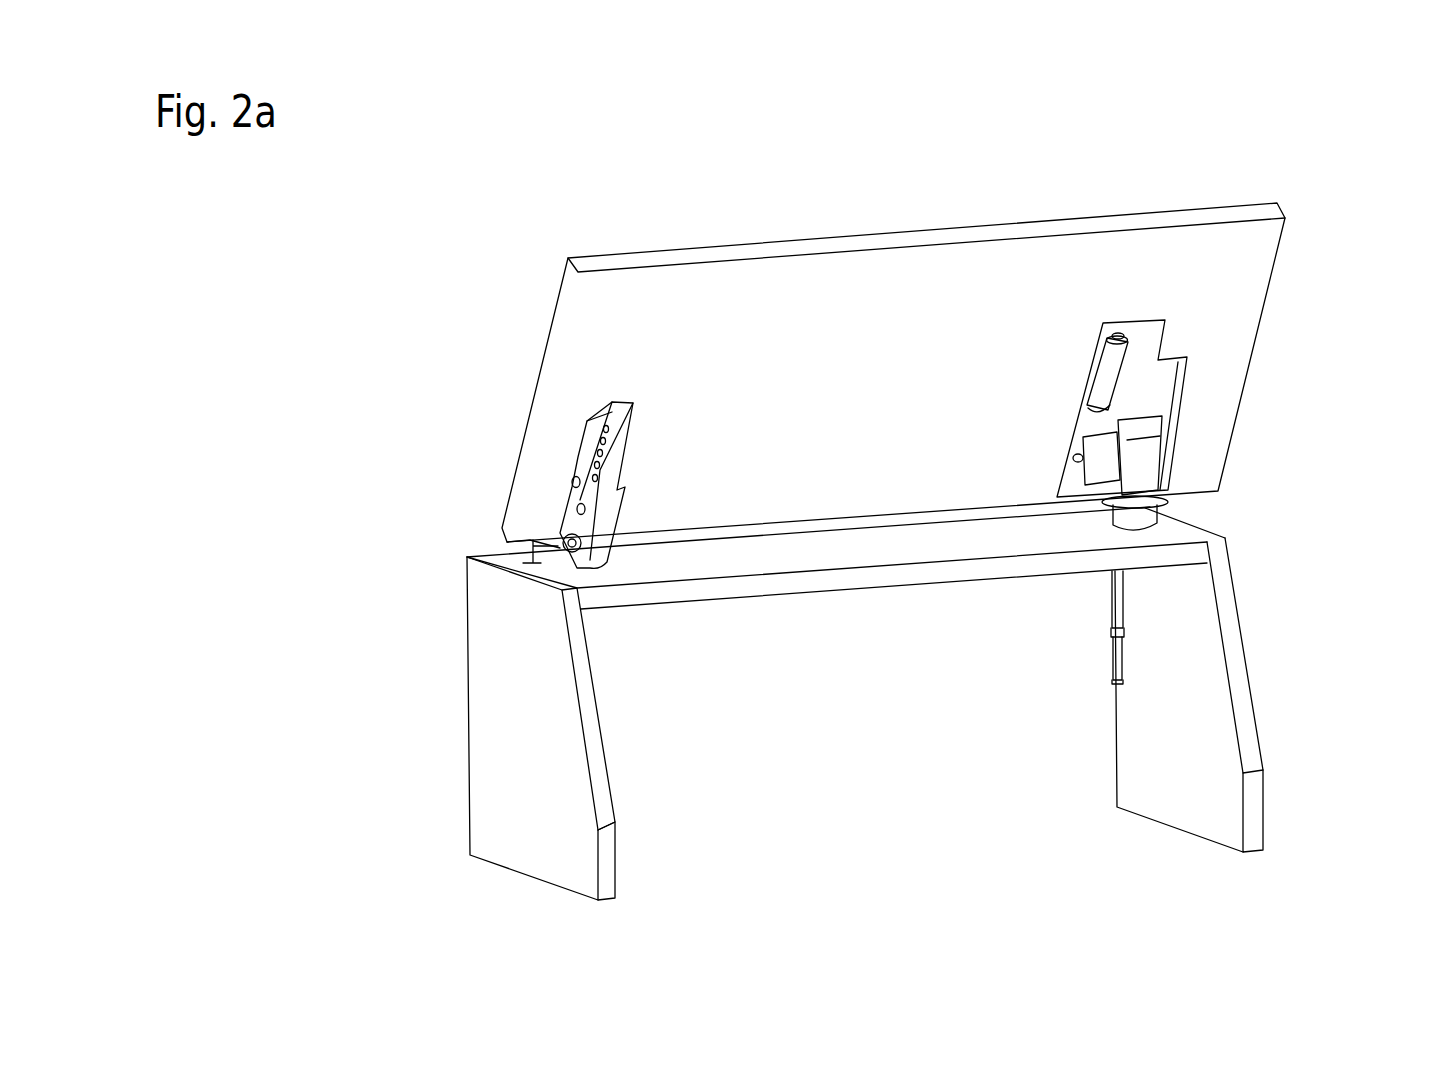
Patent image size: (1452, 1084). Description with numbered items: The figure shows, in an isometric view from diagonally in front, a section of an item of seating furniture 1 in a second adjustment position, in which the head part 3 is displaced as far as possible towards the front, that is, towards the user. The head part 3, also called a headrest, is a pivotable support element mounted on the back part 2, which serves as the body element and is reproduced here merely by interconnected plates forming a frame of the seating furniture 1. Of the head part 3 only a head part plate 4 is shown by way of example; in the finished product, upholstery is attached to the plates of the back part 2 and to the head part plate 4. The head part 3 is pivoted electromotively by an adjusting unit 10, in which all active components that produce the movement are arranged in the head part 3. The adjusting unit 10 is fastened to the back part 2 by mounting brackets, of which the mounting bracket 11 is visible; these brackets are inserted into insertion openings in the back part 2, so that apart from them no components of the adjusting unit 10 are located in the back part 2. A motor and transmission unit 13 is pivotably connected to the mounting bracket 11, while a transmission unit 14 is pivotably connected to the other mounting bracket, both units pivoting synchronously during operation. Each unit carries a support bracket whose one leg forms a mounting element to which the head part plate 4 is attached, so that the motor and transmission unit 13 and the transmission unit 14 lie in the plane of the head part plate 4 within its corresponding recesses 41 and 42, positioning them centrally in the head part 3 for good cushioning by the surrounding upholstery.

The item of seating furniture 1 is at (800, 710).
The back part 2 is at (597, 777).
The head part 3 is at (865, 679).
The head part plate 4 is at (808, 305).
The adjusting unit 10 is at (1235, 338).
The mounting bracket 11 is at (1115, 595).
The motor and transmission unit 13 is at (1177, 420).
The transmission unit 14 is at (597, 537).
The recess 41 is at (1147, 320).
The recess 42 is at (499, 360).